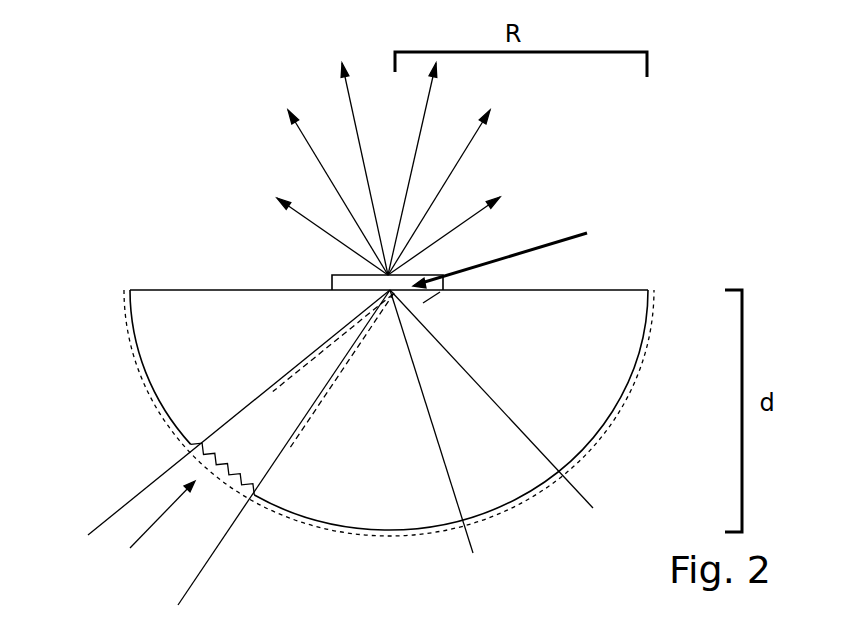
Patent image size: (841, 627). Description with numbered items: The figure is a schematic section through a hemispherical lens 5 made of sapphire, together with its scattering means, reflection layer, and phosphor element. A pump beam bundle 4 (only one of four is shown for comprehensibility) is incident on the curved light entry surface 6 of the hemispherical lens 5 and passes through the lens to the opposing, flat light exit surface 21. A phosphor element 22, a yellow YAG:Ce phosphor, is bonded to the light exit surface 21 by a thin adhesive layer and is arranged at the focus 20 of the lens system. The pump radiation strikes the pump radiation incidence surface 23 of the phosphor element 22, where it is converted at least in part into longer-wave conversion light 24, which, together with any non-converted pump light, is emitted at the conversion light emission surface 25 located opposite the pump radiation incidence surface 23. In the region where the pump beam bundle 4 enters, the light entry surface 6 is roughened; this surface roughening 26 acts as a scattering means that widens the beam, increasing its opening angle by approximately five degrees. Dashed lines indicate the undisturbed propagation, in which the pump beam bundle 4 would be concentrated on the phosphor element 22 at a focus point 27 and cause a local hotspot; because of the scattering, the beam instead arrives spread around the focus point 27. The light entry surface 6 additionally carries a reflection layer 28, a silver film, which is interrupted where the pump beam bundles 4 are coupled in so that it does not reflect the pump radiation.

The pump beam bundle 4 is at (165, 563).
The hemispherical lens 5 is at (213, 355).
The light entry surface 6 is at (247, 492).
The focus 20 is at (515, 252).
The light exit surface 21 is at (548, 270).
The phosphor element 22 is at (423, 292).
The pump radiation incidence surface 23 is at (504, 414).
The conversion light 24 is at (353, 118).
The conversion light emission surface 25 is at (357, 262).
The surface roughening 26 is at (240, 433).
The focus point 27 is at (440, 436).
The reflection layer 28 is at (642, 368).